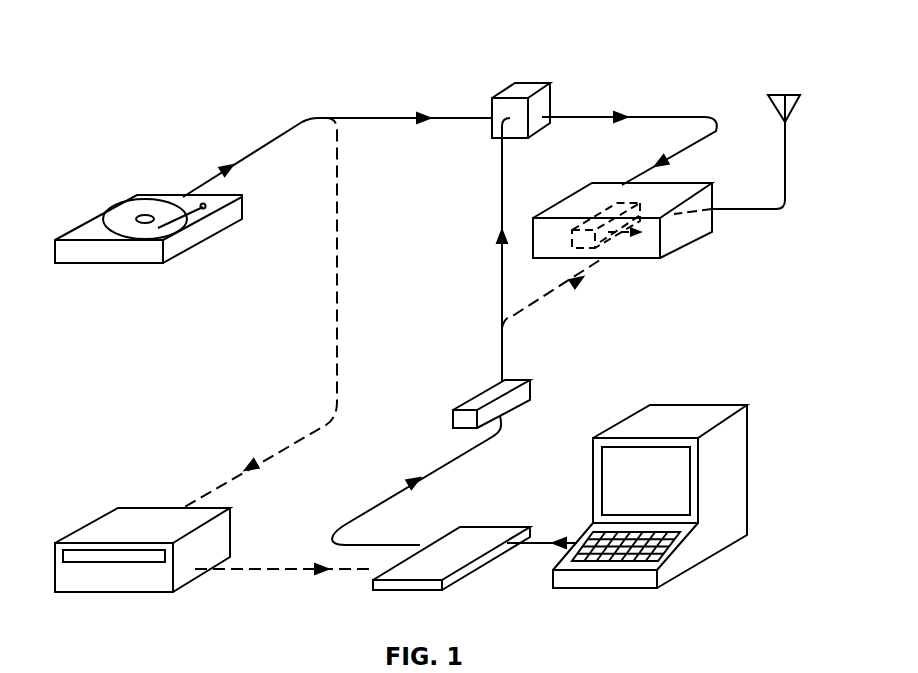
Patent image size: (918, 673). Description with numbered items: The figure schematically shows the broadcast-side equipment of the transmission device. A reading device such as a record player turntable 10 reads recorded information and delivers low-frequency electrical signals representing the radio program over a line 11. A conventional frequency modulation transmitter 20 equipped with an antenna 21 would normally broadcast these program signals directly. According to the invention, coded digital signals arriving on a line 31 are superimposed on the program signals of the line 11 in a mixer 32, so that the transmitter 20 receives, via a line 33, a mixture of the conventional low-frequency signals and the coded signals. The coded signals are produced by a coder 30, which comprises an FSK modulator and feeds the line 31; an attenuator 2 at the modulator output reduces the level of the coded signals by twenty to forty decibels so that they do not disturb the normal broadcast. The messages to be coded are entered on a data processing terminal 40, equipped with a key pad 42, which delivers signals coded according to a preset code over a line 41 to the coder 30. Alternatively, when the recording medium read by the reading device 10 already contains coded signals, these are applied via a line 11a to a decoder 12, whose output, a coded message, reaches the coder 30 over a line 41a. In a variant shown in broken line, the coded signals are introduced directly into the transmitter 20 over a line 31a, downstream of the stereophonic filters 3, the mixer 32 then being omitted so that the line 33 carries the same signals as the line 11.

The record player turntable 10 is at (82, 226).
The line 11 is at (385, 117).
The line 11a is at (334, 305).
The decoder 12 is at (107, 523).
The attenuator 2 is at (455, 405).
The frequency modulation transmitter 20 is at (688, 237).
The antenna 21 is at (788, 165).
The stereophonic filters 3 is at (613, 250).
The coder 30 is at (463, 572).
The line 31 is at (500, 273).
The line 31a is at (557, 292).
The mixer 32 is at (527, 82).
The line 33 is at (659, 115).
The data processing terminal 40 is at (701, 517).
The line 41 is at (542, 543).
The line 41a is at (258, 570).
The keyboard 42 is at (623, 560).